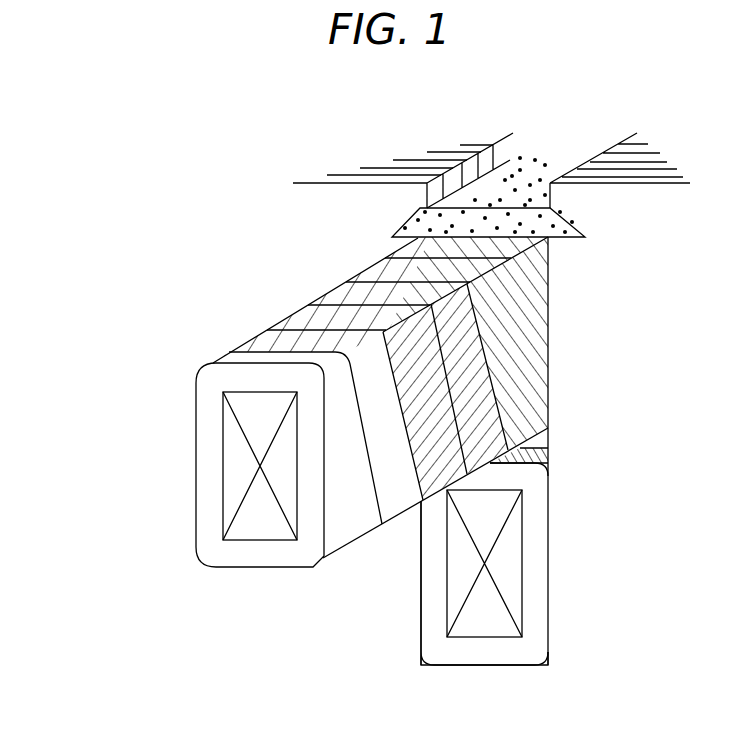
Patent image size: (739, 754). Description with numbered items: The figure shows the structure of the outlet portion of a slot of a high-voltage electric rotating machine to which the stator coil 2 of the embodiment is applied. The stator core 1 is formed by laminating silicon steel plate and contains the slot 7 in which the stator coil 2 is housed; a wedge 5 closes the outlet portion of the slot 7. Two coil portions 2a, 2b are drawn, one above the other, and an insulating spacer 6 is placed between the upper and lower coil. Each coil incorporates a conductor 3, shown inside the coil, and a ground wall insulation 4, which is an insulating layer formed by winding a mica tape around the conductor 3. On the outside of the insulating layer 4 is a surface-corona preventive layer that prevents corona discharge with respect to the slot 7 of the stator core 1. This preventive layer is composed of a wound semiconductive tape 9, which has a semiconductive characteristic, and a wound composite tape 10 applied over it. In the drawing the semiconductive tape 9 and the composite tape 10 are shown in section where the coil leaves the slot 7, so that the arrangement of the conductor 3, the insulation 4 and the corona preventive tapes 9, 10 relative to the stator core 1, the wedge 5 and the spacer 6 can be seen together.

The stator core 1 is at (372, 207).
The stator coil 2 is at (134, 369).
The first coil 2a is at (180, 492).
The second coil 2b is at (400, 589).
The conductor 3 is at (233, 446).
The ground wall insulation 4 is at (208, 379).
The wedge 5 is at (568, 226).
The insulating spacer 6 is at (547, 449).
The slot 7 is at (550, 660).
The semiconductive tape 9 is at (352, 296).
The composite tape 10 is at (528, 376).